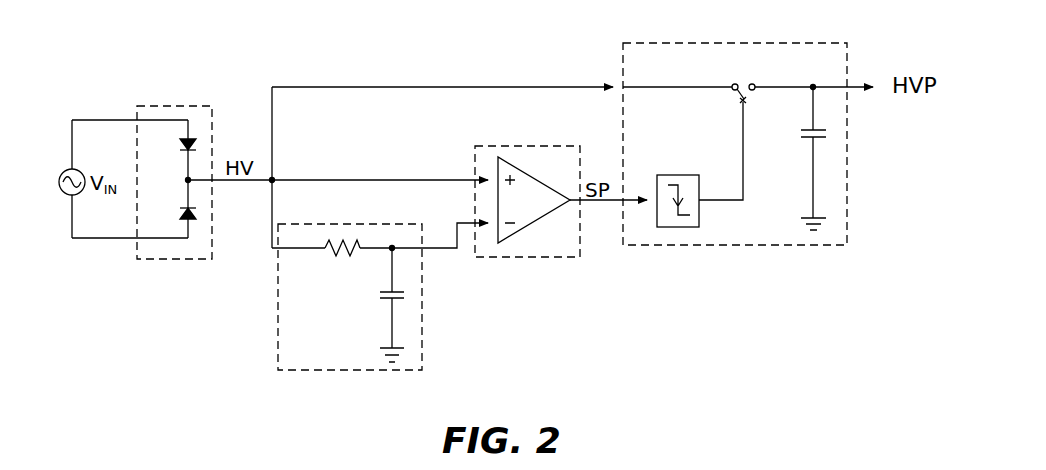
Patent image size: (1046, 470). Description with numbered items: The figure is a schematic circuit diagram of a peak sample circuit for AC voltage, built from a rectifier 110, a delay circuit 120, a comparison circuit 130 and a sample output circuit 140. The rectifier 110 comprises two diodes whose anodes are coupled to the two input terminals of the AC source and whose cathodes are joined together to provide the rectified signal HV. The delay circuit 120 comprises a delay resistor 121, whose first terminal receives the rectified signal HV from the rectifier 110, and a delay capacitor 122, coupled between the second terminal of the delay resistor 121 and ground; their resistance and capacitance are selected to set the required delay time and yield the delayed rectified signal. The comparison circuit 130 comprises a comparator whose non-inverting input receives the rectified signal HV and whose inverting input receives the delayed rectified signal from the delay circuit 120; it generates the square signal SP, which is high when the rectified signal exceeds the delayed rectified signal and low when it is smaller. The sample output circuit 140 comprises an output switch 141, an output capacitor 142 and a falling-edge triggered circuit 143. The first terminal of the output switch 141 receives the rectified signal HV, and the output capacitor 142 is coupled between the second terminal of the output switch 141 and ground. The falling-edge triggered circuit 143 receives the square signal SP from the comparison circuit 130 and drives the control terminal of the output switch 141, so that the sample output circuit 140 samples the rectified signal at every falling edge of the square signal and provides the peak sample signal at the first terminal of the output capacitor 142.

The rectifier 110 is at (155, 105).
The delay circuit 120 is at (352, 287).
The delay resistor 121 is at (333, 258).
The delay capacitor 122 is at (380, 297).
The comparison circuit 130 is at (550, 257).
The sample output circuit 140 is at (748, 162).
The output switch 141 is at (742, 75).
The output capacitor 142 is at (802, 137).
The falling-edge triggered circuit 143 is at (688, 175).